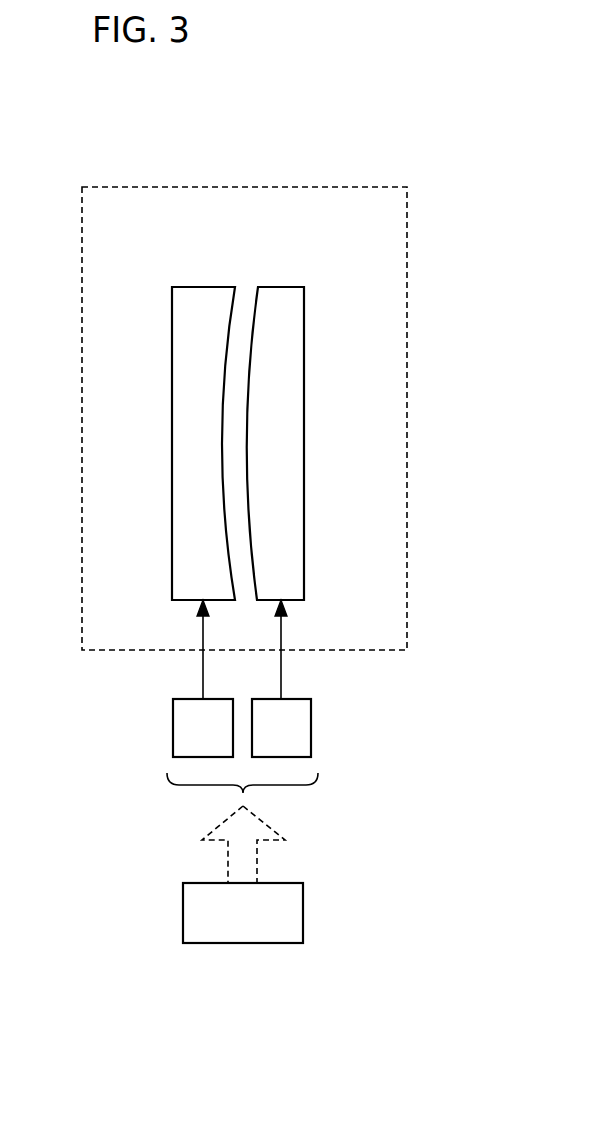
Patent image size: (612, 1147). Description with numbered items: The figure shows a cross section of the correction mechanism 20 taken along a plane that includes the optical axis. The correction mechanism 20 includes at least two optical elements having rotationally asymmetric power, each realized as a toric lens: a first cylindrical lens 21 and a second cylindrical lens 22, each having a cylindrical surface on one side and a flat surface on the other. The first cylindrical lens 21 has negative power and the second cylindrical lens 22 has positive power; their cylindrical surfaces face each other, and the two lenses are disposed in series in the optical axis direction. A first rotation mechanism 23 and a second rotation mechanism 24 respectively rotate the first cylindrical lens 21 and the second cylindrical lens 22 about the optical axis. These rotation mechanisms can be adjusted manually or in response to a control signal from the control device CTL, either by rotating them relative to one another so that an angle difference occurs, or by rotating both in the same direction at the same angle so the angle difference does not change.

The correction mechanism 20 is at (325, 187).
The first cylindrical lens 21 is at (210, 287).
The second cylindrical lens 22 is at (285, 287).
The first rotation mechanism 23 is at (173, 725).
The second rotation mechanism 24 is at (311, 725).
The control device CTL is at (285, 883).